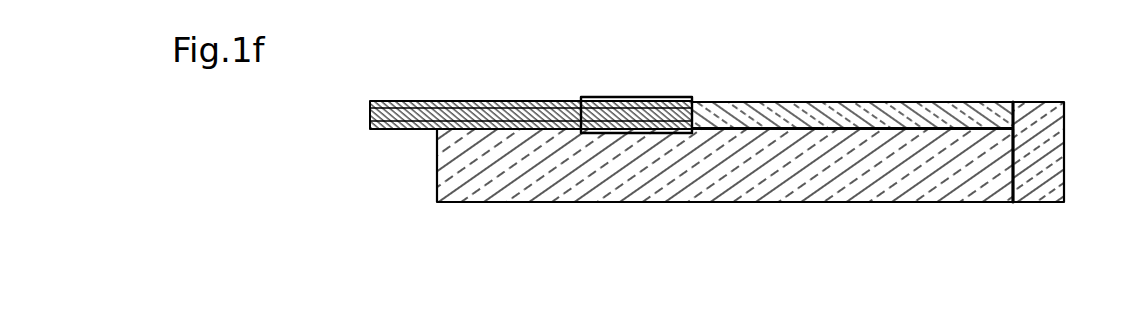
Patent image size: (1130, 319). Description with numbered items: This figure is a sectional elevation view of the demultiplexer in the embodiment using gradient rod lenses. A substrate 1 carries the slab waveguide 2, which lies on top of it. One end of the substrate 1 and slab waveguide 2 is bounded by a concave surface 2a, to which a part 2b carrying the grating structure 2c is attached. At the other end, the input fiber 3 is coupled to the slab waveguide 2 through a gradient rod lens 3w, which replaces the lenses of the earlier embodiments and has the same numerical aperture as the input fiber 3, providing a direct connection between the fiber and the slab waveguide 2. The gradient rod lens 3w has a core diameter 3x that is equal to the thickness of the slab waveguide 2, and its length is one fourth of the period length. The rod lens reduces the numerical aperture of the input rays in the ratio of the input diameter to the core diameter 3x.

The substrate 1 is at (548, 180).
The slab waveguide 2 is at (871, 113).
The concave surface 2a is at (1011, 147).
The part 2b is at (1049, 165).
The grating structure 2c is at (1021, 122).
The input fiber 3 is at (426, 101).
The gradient rod lens 3w is at (630, 97).
The core diameter 3x is at (676, 118).